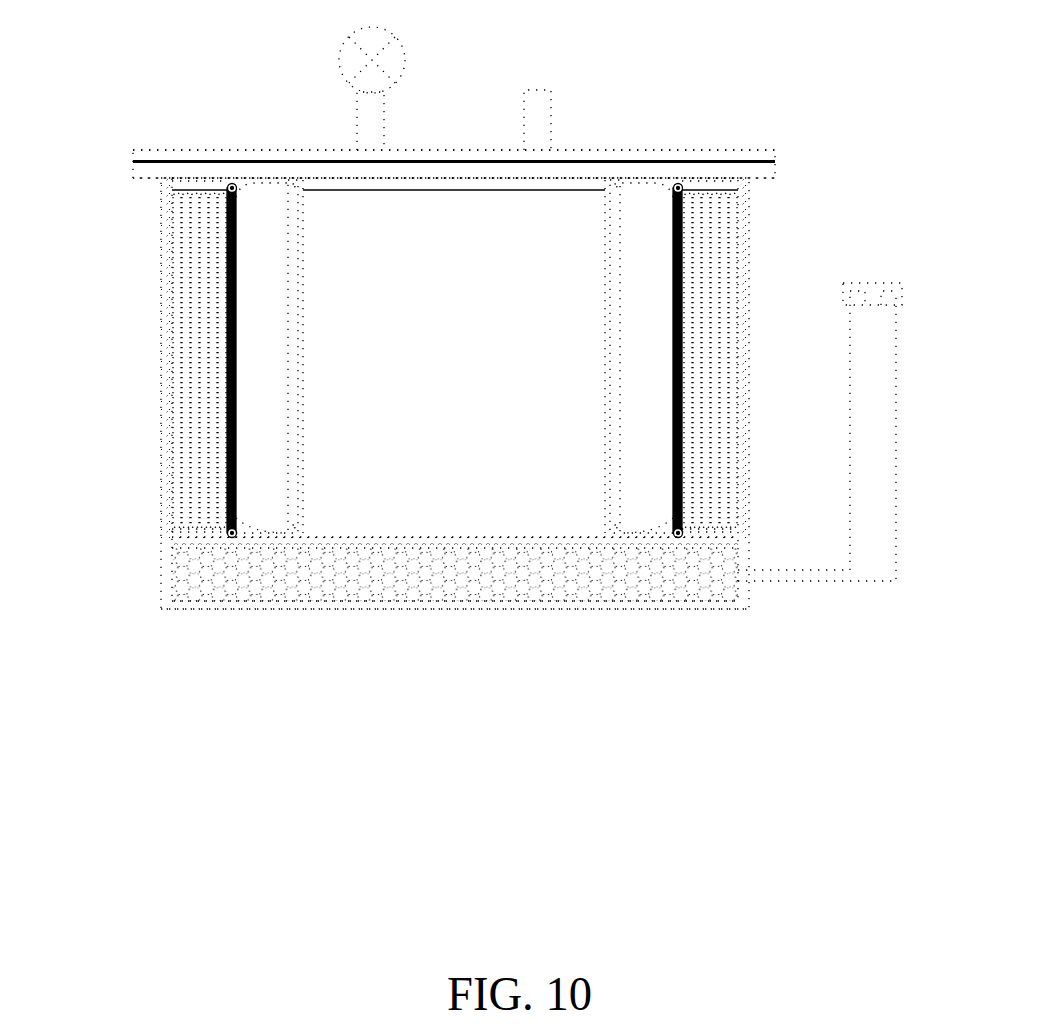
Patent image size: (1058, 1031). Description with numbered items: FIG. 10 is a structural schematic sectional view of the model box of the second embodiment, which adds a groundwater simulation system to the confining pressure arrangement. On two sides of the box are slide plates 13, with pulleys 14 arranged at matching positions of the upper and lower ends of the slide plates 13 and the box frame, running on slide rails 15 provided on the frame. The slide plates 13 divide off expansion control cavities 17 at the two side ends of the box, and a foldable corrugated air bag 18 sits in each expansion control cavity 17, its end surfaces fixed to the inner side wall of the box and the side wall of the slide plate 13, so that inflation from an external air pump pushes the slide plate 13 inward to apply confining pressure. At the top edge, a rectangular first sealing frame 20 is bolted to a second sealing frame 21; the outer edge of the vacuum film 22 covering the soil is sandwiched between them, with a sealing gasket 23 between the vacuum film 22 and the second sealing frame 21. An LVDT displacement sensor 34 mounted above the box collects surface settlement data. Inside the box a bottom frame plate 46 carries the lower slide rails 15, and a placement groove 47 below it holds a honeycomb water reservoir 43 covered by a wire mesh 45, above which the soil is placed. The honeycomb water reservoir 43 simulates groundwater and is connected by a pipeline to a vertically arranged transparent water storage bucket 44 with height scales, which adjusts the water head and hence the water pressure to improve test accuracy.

The slide plate 13 is at (225, 203).
The pulley 14 is at (231, 182).
The slide rail 15 is at (214, 183).
The expansion control cavity 17 is at (178, 527).
The corrugated air bag 18 is at (190, 367).
The first sealing frame 20 is at (131, 172).
The second sealing frame 21 is at (131, 148).
The vacuum film 22 is at (131, 164).
The sealing gasket 23 is at (131, 158).
The LVDT displacement sensor 34 is at (362, 38).
The honeycomb water reservoir 43 is at (190, 580).
The transparent water storage bucket 44 is at (898, 437).
The wire mesh 45 is at (170, 546).
The bottom frame plate 46 is at (168, 540).
The placement groove 47 is at (258, 603).